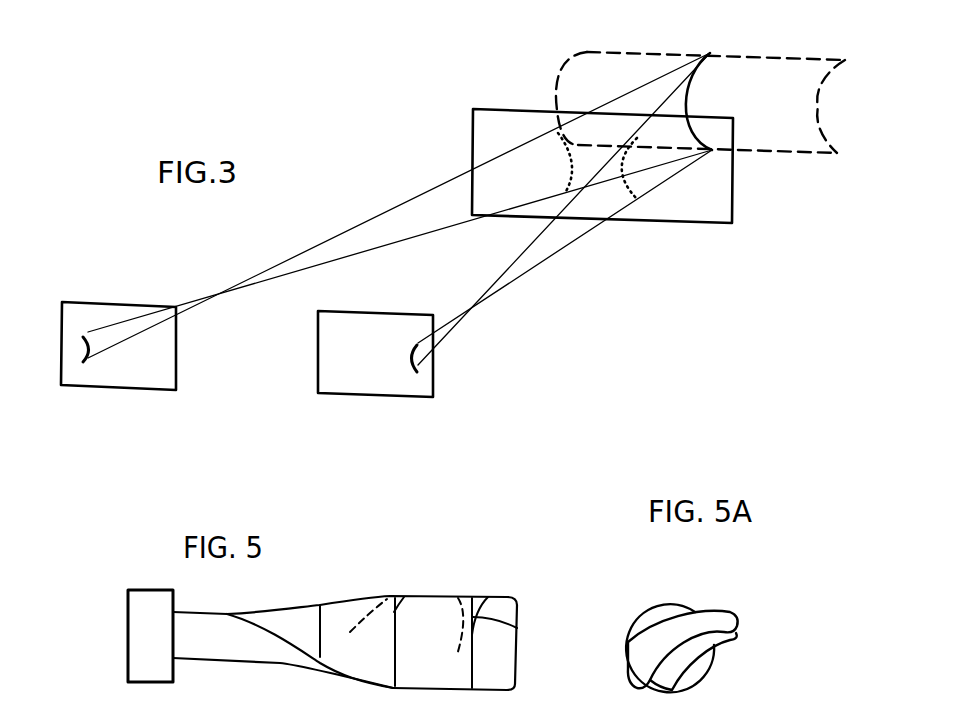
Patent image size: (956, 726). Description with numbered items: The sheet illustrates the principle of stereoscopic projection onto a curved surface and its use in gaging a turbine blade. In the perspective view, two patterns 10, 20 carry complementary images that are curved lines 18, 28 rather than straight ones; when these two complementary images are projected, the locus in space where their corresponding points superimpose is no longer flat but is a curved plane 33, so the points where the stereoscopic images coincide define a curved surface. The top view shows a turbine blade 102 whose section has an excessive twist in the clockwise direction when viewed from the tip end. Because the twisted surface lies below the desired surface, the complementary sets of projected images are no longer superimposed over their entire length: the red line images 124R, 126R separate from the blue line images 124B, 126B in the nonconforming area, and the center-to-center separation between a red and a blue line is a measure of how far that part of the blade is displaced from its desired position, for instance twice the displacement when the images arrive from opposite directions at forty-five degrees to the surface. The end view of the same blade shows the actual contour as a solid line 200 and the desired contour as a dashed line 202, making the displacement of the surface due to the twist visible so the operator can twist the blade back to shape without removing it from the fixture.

In FIG. 3, the curved plane 33 is at (764, 52).
In FIG. 3, the pattern 20 is at (176, 352).
In FIG. 3, the curved line 28 is at (82, 349).
In FIG. 3, the pattern 10 is at (318, 363).
In FIG. 3, the curved line 18 is at (417, 361).
In FIG. 5, the turbine blade 102 is at (340, 596).
In FIG. 5A, the turbine blade 102 is at (678, 585).
In FIG. 5, the red line image 124R is at (362, 627).
In FIG. 5, the blue line image 124B is at (429, 642).
In FIG. 5, the red line image 126R is at (440, 643).
In FIG. 5, the blue line image 126B is at (517, 628).
In FIG. 5A, the desired contour 202 is at (702, 607).
In FIG. 5A, the actual contour 200 is at (737, 627).